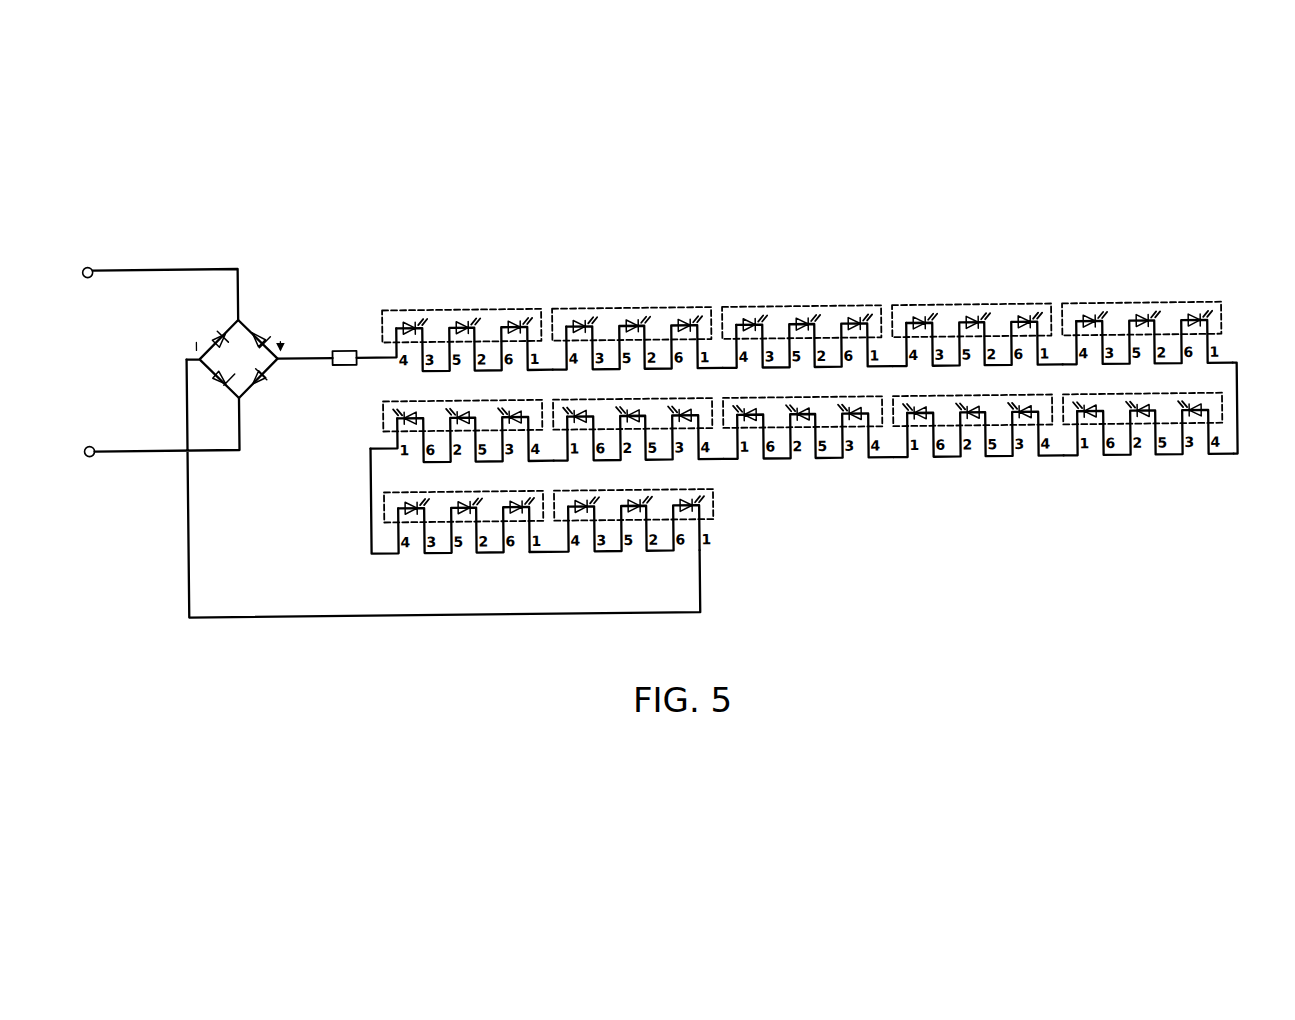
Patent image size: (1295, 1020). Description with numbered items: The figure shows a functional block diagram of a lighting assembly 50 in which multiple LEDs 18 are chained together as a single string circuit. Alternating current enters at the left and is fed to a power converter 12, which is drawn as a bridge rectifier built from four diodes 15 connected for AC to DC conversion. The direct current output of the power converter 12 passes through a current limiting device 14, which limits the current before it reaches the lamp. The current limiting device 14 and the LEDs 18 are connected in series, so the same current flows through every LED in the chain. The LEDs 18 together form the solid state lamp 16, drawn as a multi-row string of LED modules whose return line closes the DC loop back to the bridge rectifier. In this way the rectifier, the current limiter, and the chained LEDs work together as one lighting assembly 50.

The power converter 12 is at (276, 298).
The current limiting device 14 is at (349, 372).
The diode 15 is at (263, 383).
The solid state lamp 16 is at (1237, 314).
The LED 18 is at (1023, 325).
The lighting assembly 50 is at (366, 656).